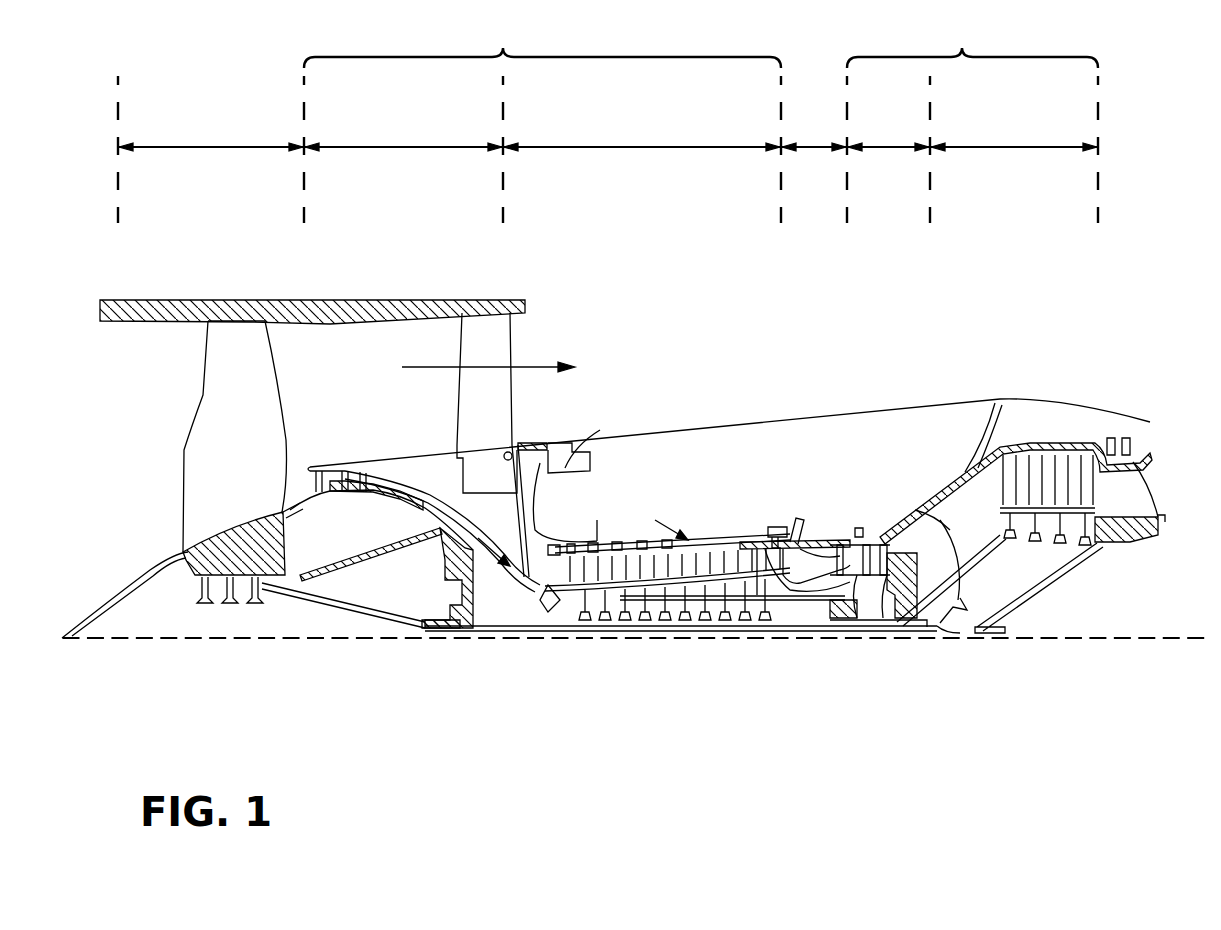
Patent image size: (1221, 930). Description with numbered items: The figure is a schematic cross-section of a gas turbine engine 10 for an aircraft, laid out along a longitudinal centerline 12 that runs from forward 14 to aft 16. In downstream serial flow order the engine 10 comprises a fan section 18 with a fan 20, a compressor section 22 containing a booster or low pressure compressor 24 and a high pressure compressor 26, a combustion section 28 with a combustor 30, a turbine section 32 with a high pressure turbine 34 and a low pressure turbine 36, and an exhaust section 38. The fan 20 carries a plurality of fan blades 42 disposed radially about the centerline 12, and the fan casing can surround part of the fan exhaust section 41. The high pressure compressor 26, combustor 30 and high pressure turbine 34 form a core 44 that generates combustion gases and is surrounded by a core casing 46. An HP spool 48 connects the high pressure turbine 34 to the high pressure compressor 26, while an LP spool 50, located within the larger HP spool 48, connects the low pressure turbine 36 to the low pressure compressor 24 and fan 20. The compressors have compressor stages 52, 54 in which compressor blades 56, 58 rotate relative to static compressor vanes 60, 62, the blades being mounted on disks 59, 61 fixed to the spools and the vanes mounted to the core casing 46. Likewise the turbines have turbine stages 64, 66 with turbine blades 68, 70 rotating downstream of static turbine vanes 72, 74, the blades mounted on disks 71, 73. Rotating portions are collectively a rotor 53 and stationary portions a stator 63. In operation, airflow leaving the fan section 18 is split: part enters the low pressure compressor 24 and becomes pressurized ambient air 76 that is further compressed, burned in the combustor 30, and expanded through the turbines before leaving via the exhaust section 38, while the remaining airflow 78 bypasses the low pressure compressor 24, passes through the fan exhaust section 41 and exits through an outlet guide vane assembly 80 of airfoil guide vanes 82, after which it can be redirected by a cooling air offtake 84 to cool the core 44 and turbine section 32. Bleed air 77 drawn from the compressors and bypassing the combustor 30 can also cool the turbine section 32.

The gas turbine engine 10 is at (806, 292).
The centerline 12 is at (212, 642).
The forward 14 is at (68, 423).
The aft 16 is at (1178, 501).
The fan section 18 is at (211, 136).
The fan 20 is at (148, 495).
The compressor section 22 is at (542, 44).
The low pressure compressor 24 is at (403, 136).
The high pressure compressor 26 is at (642, 136).
The combustion section 28 is at (814, 133).
The combustor 30 is at (818, 552).
The turbine section 32 is at (972, 44).
The high pressure turbine 34 is at (888, 136).
The low pressure turbine 36 is at (1014, 136).
The exhaust section 38 is at (1167, 456).
The fan exhaust section 41 is at (554, 327).
The fan blades 42 is at (262, 372).
The core 44 is at (760, 454).
The core casing 46 is at (982, 432).
The HP spool 48 is at (795, 640).
The LP spool 50 is at (440, 635).
The compressor stages 52 is at (352, 408).
The rotor 53 is at (393, 520).
The compressor stages 54 is at (628, 452).
The compressor blades 56 is at (338, 475).
The compressor blades 58 is at (550, 560).
The disk 59 is at (328, 505).
The static compressor vanes 60 is at (320, 463).
The disk 61 is at (565, 605).
The static compressor vanes 62 is at (578, 530).
The stator 63 is at (553, 603).
The turbine stages 64 is at (845, 470).
The turbine stages 66 is at (1080, 357).
The turbine blades 68 is at (865, 545).
The turbine blades 70 is at (1080, 452).
The disk 71 is at (866, 640).
The static turbine vanes 72 is at (848, 535).
The disk 73 is at (965, 632).
The static turbine vanes 74 is at (1068, 450).
The pressurized ambient air 76 is at (505, 525).
The bleed air 77 is at (680, 535).
The airflow 78 is at (430, 362).
The outlet guide vane assembly 80 is at (524, 407).
The airfoil guide vanes 82 is at (467, 400).
The cooling air offtake 84 is at (585, 465).